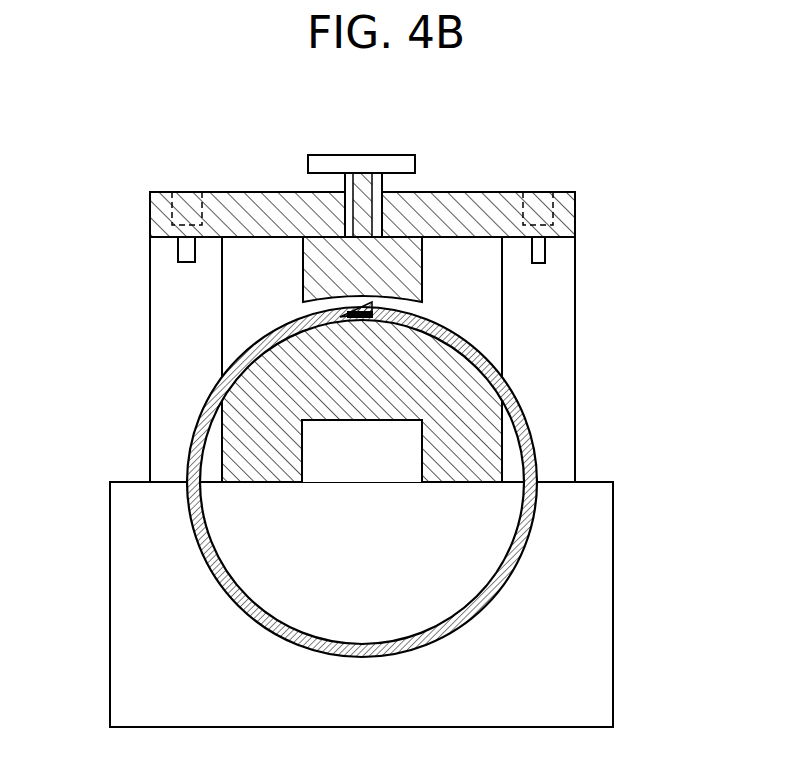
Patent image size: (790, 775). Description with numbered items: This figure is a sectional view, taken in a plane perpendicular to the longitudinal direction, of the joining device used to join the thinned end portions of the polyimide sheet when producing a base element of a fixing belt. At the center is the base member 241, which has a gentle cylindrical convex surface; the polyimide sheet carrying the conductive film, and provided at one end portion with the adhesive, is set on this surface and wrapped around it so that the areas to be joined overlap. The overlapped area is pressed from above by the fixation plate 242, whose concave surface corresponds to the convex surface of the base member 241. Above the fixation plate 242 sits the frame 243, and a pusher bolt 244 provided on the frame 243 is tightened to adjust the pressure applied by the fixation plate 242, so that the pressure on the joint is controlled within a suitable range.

The base member 241 is at (485, 436).
The fixation plate 242 is at (423, 268).
The frame 243 is at (273, 192).
The pusher bolt 244 is at (377, 155).